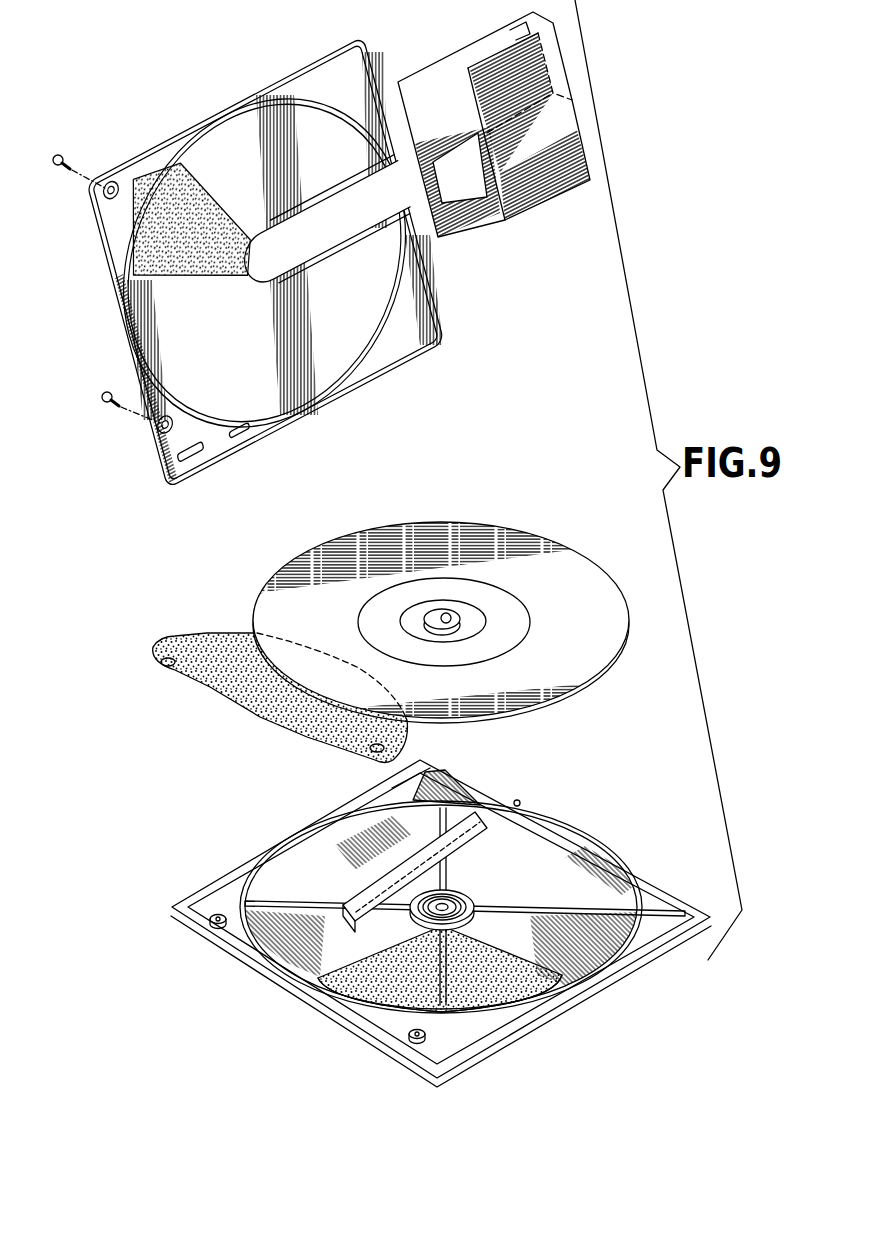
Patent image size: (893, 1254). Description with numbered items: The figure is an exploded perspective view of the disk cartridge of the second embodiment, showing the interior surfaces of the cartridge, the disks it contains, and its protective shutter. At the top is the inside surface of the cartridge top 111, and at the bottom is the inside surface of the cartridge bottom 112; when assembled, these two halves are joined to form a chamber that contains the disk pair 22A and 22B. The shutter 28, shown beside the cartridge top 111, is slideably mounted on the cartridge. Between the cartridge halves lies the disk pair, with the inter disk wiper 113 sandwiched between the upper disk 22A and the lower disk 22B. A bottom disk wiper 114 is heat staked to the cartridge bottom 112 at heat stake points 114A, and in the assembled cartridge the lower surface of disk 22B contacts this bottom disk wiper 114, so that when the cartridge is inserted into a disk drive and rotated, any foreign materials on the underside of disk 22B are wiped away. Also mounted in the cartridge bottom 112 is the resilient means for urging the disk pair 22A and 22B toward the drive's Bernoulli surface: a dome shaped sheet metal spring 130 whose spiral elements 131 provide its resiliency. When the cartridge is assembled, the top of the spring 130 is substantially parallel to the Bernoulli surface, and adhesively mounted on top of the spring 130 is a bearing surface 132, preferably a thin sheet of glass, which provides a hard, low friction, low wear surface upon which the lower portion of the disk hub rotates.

The shutter 28 is at (470, 46).
The cartridge top 111 is at (103, 237).
The cartridge bottom 112 is at (300, 985).
The inter disk wiper 113 is at (203, 678).
The bottom disk wiper 114 is at (527, 1003).
The heat stake points 114A is at (540, 965).
The disk 22A is at (553, 557).
The disk 22B is at (593, 680).
The spring 130 is at (413, 913).
The spiral elements 131 is at (500, 900).
The bearing surface 132 is at (438, 897).